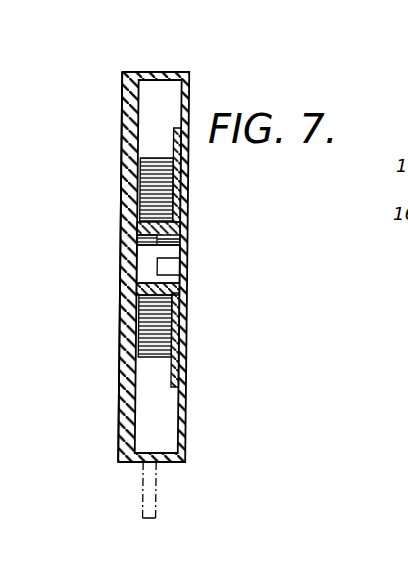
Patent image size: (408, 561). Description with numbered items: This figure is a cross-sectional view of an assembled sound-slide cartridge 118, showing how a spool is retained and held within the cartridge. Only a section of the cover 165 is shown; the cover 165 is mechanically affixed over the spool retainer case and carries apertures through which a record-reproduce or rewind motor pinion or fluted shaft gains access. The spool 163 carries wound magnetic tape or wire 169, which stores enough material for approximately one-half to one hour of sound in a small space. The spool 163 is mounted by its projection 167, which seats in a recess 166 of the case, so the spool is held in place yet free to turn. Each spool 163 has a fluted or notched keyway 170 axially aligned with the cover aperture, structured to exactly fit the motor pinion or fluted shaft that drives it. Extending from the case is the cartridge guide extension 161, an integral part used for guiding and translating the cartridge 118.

The sound-slide cartridge 118 is at (127, 94).
The cartridge guide extension 161 is at (157, 493).
The spool 163 is at (172, 172).
The cover 165 is at (188, 92).
The recess 166 is at (133, 248).
The projection 167 is at (136, 274).
The magnetic tape or wire 169 is at (128, 180).
The keyway 170 is at (186, 263).